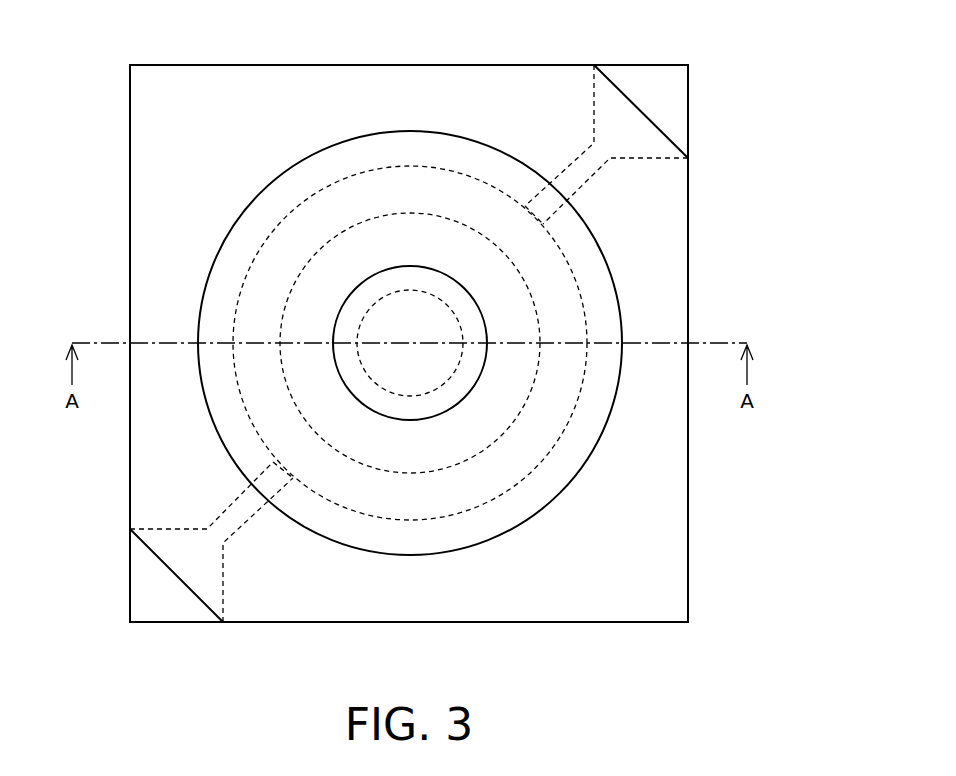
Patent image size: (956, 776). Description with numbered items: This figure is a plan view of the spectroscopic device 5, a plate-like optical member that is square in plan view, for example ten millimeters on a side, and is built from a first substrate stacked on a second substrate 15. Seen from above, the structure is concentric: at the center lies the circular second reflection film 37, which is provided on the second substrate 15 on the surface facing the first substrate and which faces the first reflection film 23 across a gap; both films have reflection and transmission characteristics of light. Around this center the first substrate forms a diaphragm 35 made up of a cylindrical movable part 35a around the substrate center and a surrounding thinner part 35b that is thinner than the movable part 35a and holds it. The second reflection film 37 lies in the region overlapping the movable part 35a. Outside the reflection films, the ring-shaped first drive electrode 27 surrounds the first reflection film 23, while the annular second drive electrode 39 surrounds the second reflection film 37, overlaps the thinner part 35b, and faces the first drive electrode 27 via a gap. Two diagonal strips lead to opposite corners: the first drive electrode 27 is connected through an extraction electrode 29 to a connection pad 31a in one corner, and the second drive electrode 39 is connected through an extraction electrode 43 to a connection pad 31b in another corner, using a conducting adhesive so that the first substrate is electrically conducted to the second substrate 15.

The spectroscopic device 5 is at (426, 333).
The second substrate 15 is at (668, 518).
The first reflection film 23 is at (410, 377).
The first drive electrode 27 is at (410, 385).
The extraction electrode 29 is at (570, 165).
The connection pad 31a is at (667, 106).
The connection pad 31b is at (152, 580).
The diaphragm 35 is at (410, 366).
The movable part 35a is at (460, 383).
The thinner part 35b is at (567, 450).
The second reflection film 37 is at (410, 396).
The second drive electrode 39 is at (410, 520).
The extraction electrode 43 is at (248, 522).